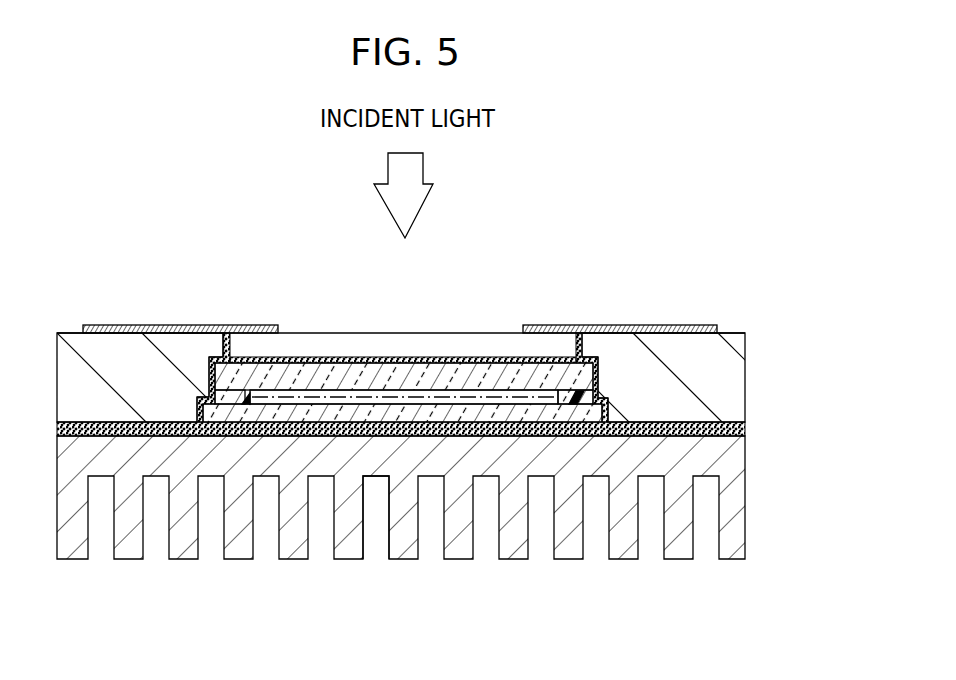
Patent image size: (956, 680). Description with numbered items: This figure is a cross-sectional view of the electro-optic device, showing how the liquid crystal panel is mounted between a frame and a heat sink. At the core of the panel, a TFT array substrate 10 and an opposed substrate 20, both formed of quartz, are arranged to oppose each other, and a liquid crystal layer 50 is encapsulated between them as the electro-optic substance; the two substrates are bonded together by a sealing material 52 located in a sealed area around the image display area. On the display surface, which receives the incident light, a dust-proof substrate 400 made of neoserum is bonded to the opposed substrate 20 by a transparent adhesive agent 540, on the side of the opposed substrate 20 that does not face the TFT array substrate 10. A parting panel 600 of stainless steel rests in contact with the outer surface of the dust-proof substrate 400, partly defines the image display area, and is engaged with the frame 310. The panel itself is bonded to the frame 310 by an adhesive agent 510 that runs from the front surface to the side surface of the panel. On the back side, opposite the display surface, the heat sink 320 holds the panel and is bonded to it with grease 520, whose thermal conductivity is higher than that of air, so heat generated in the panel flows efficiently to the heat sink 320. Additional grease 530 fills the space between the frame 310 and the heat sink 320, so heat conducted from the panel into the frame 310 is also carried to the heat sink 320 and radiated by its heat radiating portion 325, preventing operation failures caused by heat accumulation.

The TFT array substrate 10 is at (301, 410).
The opposed substrate 20 is at (305, 377).
The liquid crystal layer 50 is at (424, 400).
The sealing material 52 is at (232, 392).
The frame 310 is at (722, 390).
The heat sink 320 is at (745, 503).
The heat radiating portion 325 is at (397, 560).
The dust-proof substrate 400 is at (503, 376).
The adhesive agent 510 is at (597, 377).
The grease 520 is at (212, 428).
The grease 530 is at (743, 428).
The transparent adhesive agent 540 is at (476, 358).
The parting panel 600 is at (687, 326).